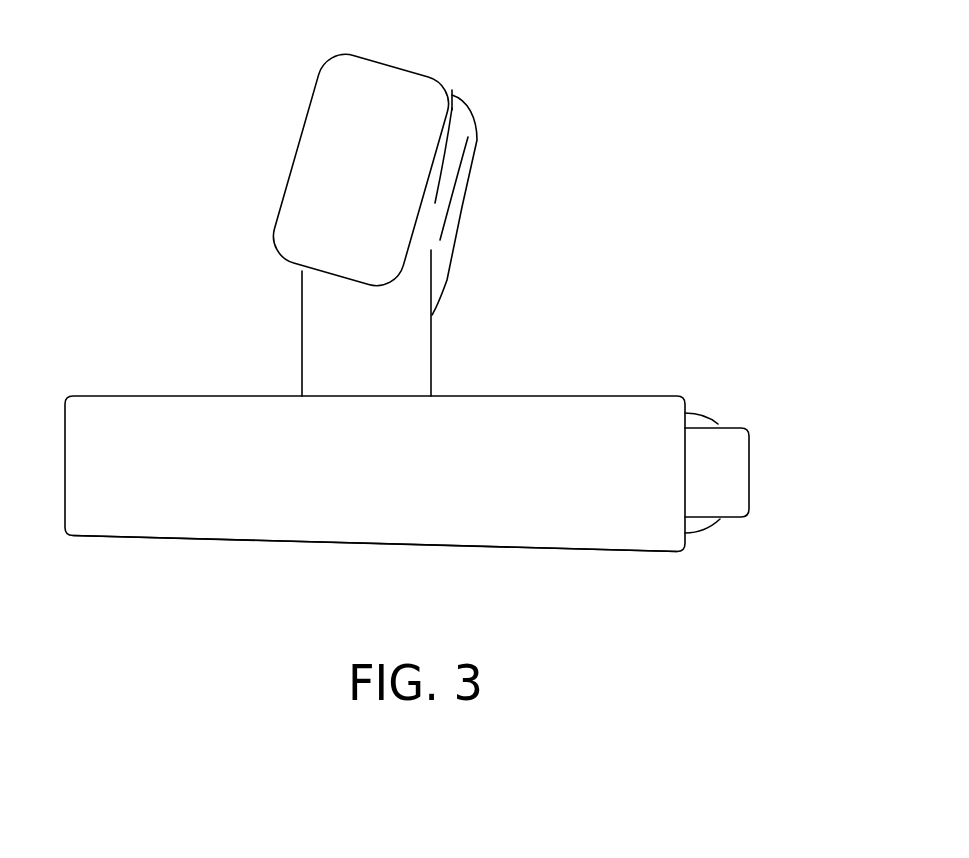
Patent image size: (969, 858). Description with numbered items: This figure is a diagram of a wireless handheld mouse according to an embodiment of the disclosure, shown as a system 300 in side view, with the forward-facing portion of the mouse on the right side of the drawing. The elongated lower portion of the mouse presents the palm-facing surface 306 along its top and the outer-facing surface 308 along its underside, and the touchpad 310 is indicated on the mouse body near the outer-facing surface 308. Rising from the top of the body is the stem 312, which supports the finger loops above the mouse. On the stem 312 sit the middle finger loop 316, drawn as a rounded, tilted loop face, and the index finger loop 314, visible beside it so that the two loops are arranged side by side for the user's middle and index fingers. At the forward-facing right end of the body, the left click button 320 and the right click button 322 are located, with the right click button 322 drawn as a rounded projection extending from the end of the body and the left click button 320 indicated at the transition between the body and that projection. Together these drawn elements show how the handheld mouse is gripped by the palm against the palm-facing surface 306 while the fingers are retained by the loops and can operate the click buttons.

The system 300 is at (160, 66).
The palm-facing surface 306 is at (138, 397).
The outer-facing surface 308 is at (597, 548).
The touchpad 310 is at (184, 540).
The stem 312 is at (313, 304).
The index finger loop 314 is at (473, 187).
The middle finger loop 316 is at (310, 181).
The left click button 320 is at (712, 422).
The right click button 322 is at (725, 483).